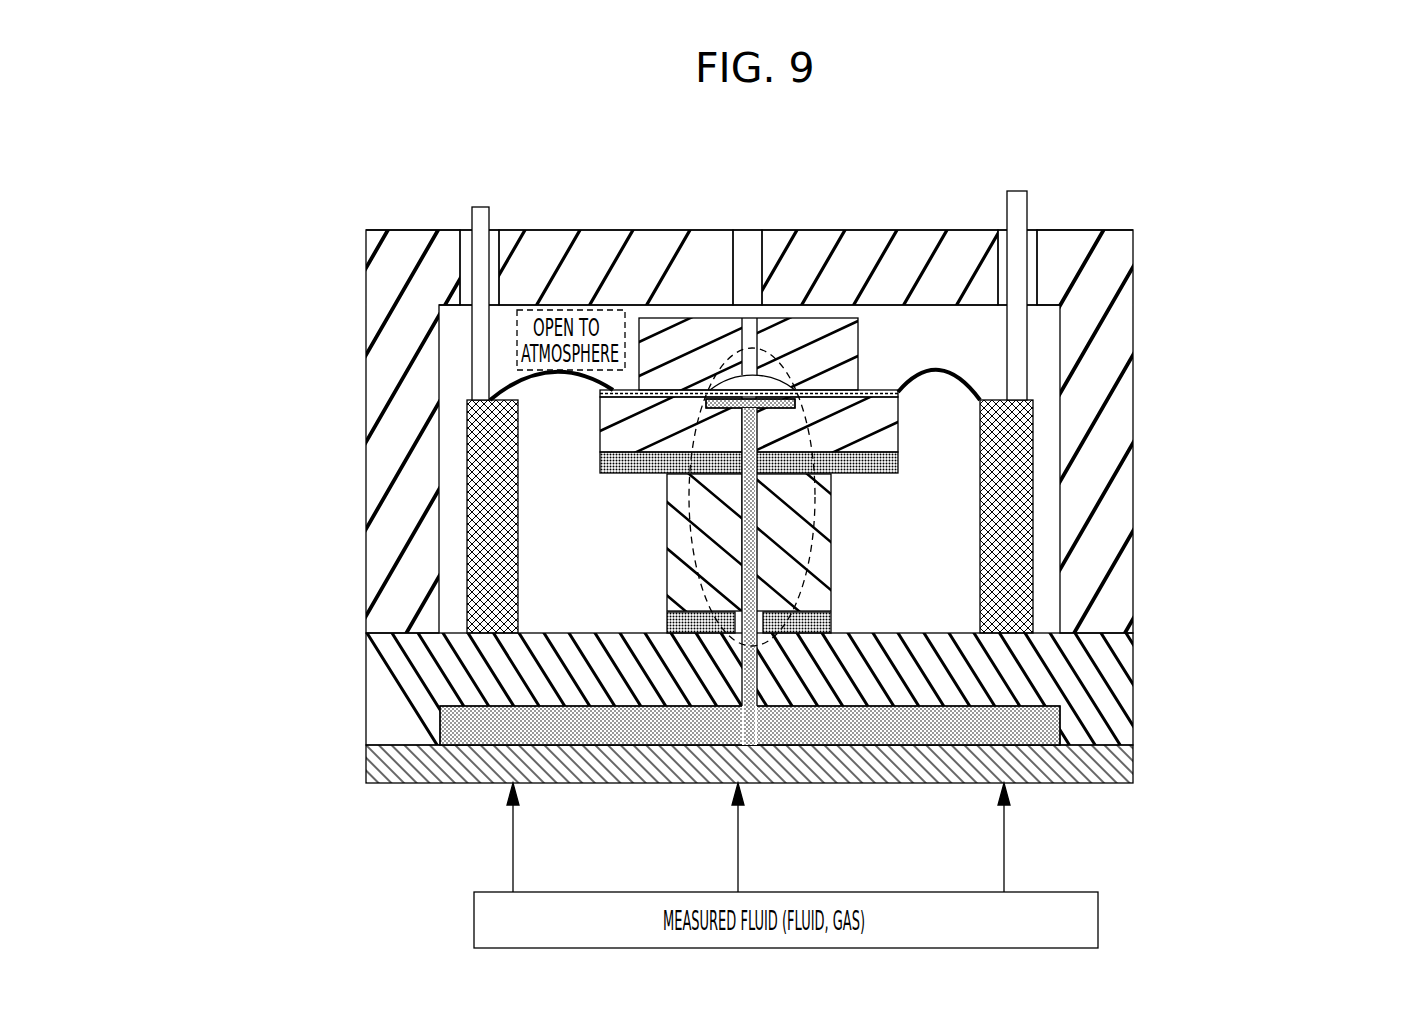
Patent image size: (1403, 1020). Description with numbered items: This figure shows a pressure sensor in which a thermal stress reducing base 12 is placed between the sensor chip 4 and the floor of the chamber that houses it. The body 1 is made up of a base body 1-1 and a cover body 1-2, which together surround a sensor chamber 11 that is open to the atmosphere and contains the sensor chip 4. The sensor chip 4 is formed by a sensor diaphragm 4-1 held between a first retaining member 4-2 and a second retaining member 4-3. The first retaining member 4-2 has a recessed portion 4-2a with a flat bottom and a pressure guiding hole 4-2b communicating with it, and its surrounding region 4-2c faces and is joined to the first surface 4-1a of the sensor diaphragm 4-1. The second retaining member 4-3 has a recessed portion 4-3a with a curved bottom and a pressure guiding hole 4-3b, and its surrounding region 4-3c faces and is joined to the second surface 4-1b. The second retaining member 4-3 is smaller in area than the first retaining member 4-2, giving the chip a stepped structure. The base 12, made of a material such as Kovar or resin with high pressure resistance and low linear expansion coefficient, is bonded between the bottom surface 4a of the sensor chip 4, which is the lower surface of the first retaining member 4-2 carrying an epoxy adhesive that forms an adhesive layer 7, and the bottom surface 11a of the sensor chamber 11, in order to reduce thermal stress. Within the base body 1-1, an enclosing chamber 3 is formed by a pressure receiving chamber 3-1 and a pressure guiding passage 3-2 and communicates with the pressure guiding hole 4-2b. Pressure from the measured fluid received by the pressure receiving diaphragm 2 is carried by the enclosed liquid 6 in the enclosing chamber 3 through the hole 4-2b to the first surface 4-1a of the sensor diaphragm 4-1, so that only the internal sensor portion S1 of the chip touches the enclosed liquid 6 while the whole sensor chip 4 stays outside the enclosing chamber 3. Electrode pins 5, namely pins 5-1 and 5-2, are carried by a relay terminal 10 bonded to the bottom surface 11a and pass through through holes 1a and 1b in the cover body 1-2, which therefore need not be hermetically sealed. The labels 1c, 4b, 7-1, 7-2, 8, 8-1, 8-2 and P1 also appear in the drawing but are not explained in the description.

The body 1 is at (734, 510).
The base body 1-1 is at (233, 461).
The cover body 1-2 is at (380, 487).
The through hole 1a is at (463, 250).
The through hole 1b is at (1035, 258).
The housing opening to atmosphere 1c is at (750, 240).
The pressure receiving diaphragm 2 is at (384, 782).
The enclosing chamber 3 is at (640, 777).
The pressure receiving chamber 3-1 is at (735, 720).
The pressure guiding passage 3-2 is at (740, 665).
The sensor chip 4 is at (847, 425).
The sensor diaphragm 4-1 is at (828, 360).
The first surface 4-1a is at (702, 420).
The second surface 4-1b is at (650, 388).
The first retaining member 4-2 is at (921, 512).
The recessed portion 4-2a is at (828, 478).
The pressure introducing hole 4-2b is at (806, 466).
The surrounding region 4-2c is at (898, 473).
The second retaining member 4-3 is at (848, 321).
The recessed portion 4-3a is at (828, 318).
The pressure introducing hole 4-3b is at (742, 365).
The surrounding region 4-3c is at (640, 345).
The bottom surface 4a is at (630, 470).
The upper cover surface 4b is at (840, 318).
The electrode pin 5 is at (726, 266).
The electrode pin 5-1 is at (477, 303).
The electrode pin 5-2 is at (1020, 228).
The enclosed liquid 6 is at (1017, 733).
The adhesive layer 7 is at (739, 542).
The lower electrode 7-1 is at (666, 624).
The upper electrode 7-2 is at (878, 468).
The sealing member 8 is at (849, 371).
The sealing member 8-1 is at (513, 372).
The sealing member 8-2 is at (1030, 418).
The relay terminal 10 is at (468, 458).
The sensor chamber 11 is at (980, 322).
The bottom surface 11a is at (560, 622).
The thermal stress reducing base 12 is at (675, 580).
The sensor portion S1 is at (786, 366).
The measured pressure P1 is at (758, 837).